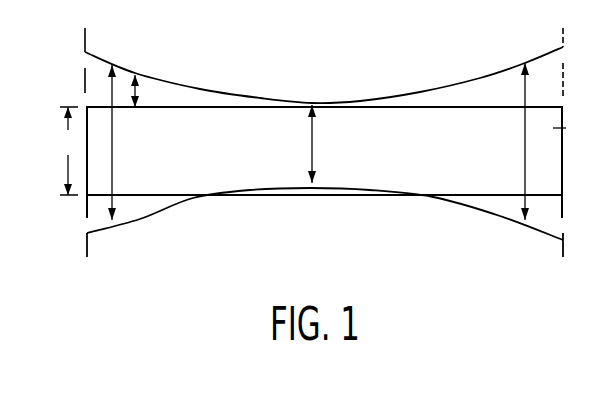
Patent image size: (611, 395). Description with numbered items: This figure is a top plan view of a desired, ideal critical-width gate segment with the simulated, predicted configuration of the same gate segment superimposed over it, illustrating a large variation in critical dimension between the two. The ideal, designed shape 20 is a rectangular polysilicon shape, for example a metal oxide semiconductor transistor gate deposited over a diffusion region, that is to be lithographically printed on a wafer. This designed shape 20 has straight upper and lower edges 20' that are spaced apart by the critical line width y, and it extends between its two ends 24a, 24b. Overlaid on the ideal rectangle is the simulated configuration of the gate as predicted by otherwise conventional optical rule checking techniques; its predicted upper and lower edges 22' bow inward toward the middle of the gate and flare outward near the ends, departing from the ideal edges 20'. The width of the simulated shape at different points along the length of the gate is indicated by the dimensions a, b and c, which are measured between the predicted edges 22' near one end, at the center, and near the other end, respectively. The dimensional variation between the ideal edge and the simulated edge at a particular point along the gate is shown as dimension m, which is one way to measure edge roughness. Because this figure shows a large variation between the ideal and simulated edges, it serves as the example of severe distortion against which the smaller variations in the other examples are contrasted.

The rectangular polysilicon shape 20 is at (349, 161).
The upper and lower edges 20' is at (324, 137).
The predicted upper and lower edges 22' is at (324, 143).
The end 24a is at (87, 247).
The end 24b is at (562, 250).
The critical line width y is at (69, 151).
The simulated shape width a is at (113, 150).
The dimensional variation m is at (138, 90).
The simulated shape width b is at (313, 149).
The simulated shape width c is at (524, 148).